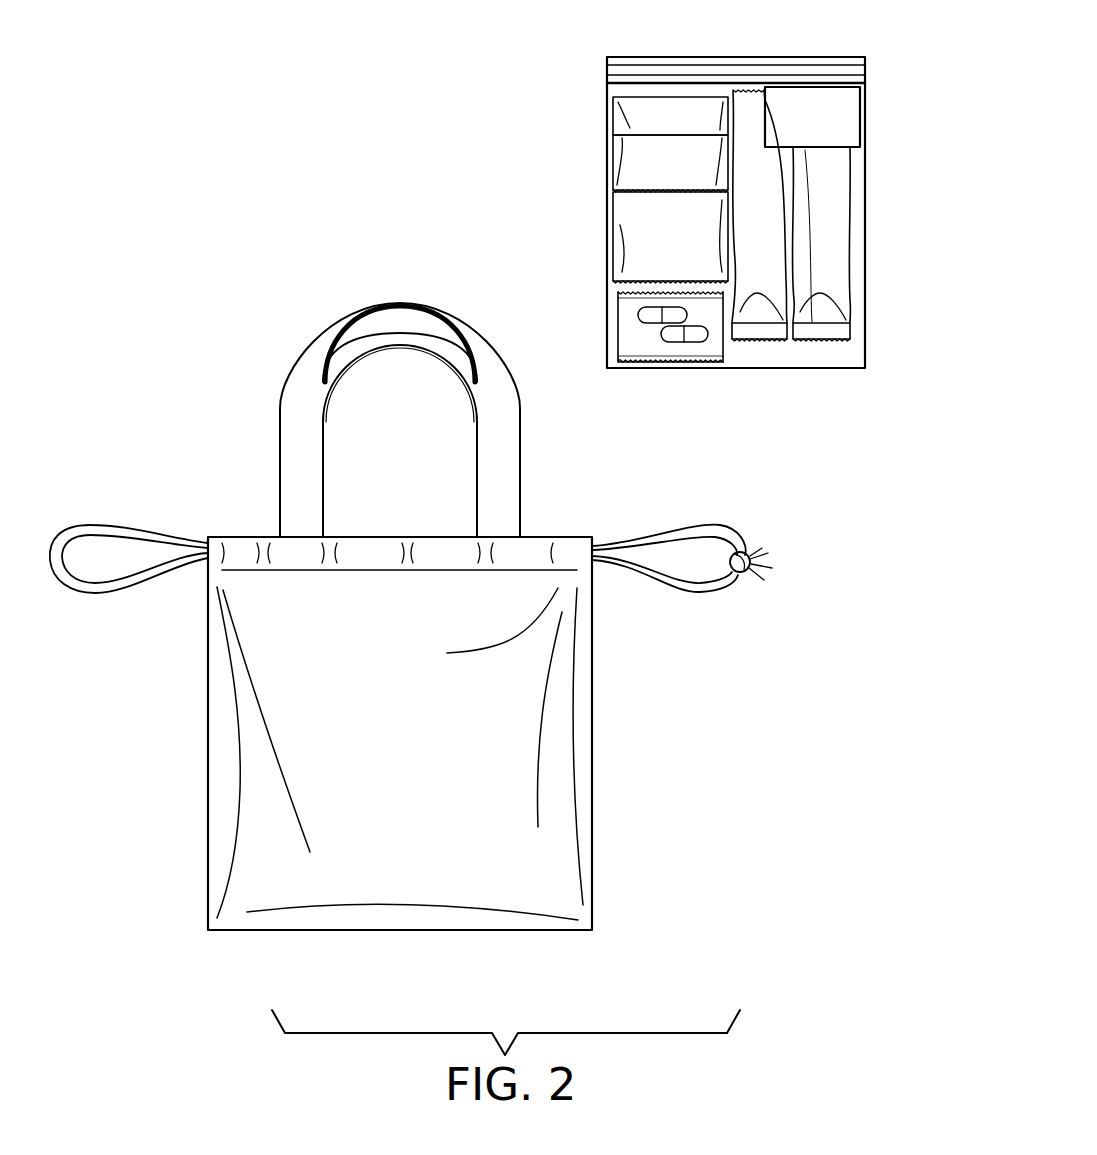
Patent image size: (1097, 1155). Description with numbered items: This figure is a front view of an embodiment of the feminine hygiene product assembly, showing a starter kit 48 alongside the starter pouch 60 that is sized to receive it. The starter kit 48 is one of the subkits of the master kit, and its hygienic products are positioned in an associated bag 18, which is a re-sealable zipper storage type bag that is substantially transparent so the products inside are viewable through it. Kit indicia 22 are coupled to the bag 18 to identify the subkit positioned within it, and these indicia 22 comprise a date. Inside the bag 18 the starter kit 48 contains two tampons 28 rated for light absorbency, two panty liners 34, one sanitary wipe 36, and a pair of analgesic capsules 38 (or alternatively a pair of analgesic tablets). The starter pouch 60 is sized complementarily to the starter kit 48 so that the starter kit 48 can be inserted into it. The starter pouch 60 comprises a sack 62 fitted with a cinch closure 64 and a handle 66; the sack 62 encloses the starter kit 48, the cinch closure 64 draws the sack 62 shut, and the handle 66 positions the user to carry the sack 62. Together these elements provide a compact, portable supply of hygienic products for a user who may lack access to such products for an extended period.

The associated bag 18 is at (878, 200).
The kit indicia 22 is at (827, 117).
The tampons 28 is at (772, 260).
The panty liners 34 is at (630, 118).
The sanitary wipes 36 is at (635, 222).
The analgesic capsules 38 is at (628, 322).
The starter kit 48 is at (556, 94).
The starter pouch 60 is at (152, 709).
The sack 62 is at (207, 794).
The cinch closure 64 is at (657, 538).
The handle 66 is at (297, 360).